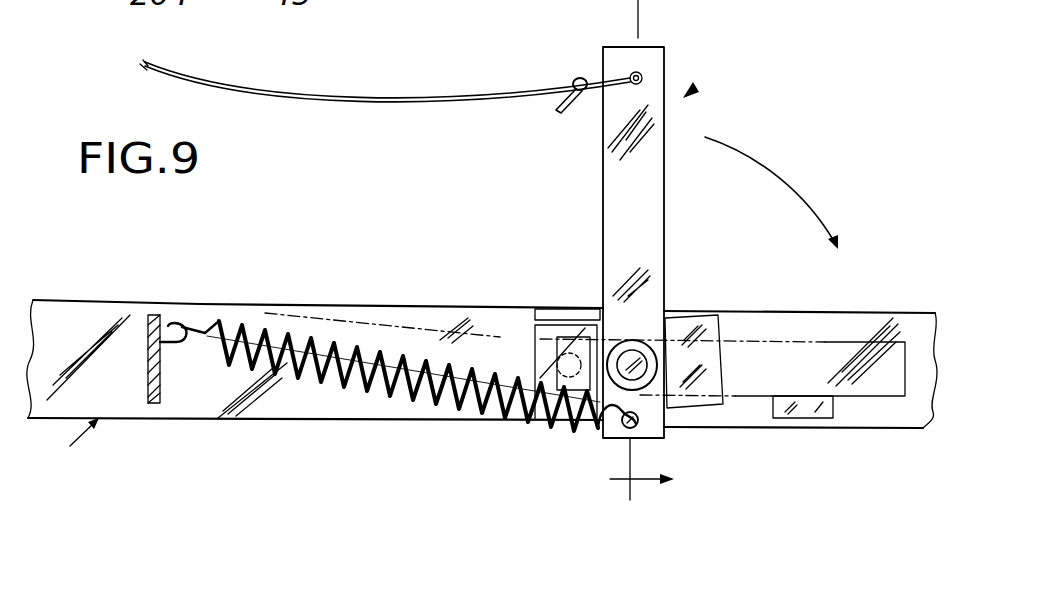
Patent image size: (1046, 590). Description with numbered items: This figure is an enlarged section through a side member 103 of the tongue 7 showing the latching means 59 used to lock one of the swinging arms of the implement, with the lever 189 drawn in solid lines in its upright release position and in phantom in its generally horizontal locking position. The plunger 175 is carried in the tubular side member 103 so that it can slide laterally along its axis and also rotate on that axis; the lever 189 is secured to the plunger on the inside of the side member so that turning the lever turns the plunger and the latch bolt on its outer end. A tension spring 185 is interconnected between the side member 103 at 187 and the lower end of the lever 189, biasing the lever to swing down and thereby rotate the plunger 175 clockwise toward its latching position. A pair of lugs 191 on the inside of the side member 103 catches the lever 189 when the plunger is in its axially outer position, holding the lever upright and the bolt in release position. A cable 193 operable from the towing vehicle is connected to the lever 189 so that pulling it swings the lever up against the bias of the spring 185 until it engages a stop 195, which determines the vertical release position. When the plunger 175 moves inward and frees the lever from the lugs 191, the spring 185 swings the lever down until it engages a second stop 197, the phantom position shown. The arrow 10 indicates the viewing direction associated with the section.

The tongue 7 is at (74, 440).
The direction of travel arrow 10 is at (635, 472).
The latching means 59 is at (700, 86).
The tongue side member 103 is at (60, 300).
The plunger 175 is at (657, 367).
The tension spring 185 is at (316, 380).
The spring connection point on side member 187 is at (176, 316).
The lever 189 is at (652, 212).
The lugs 191 is at (536, 330).
The cable 193 is at (350, 64).
The stop 195 is at (560, 312).
The stop 197 is at (818, 419).